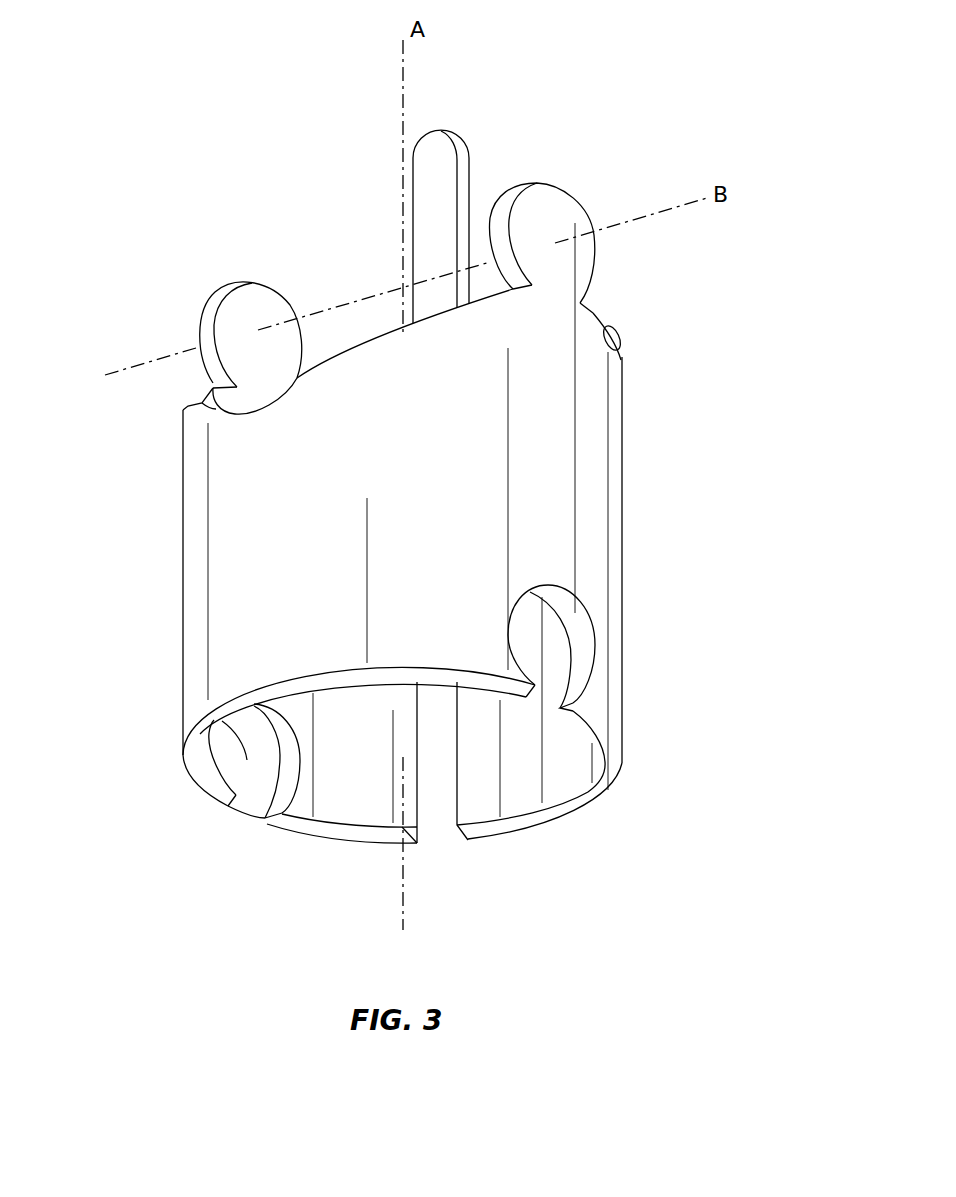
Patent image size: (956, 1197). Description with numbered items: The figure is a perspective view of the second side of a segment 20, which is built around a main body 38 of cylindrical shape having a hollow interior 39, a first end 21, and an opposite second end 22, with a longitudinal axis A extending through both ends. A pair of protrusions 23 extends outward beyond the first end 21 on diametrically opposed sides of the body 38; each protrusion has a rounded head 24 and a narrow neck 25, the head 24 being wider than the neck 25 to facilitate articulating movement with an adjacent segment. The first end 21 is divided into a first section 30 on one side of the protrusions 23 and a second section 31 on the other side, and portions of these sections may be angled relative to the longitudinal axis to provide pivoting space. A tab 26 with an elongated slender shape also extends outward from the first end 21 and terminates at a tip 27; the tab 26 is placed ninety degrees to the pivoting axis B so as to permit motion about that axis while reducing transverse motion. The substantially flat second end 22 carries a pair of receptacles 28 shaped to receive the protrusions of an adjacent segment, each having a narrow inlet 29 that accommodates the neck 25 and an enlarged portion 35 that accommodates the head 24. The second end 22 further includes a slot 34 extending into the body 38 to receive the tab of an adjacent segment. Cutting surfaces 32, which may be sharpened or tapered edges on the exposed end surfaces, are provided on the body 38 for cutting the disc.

The segment 20 is at (703, 495).
The first end 21 is at (353, 346).
The second end 22 is at (320, 831).
The protrusions 23 is at (207, 320).
The head 24 is at (250, 302).
The neck 25 is at (560, 297).
The tab 26 is at (435, 161).
The tip 27 is at (455, 132).
The receptacles 28 is at (248, 762).
The narrow inlet 29 is at (249, 810).
The first section 30 is at (607, 332).
The second section 31 is at (377, 338).
The cutting surfaces 32 is at (192, 403).
The slot 34 is at (430, 752).
The enlarged portion 35 is at (237, 742).
The main body 38 is at (597, 570).
The hollow interior 39 is at (540, 777).